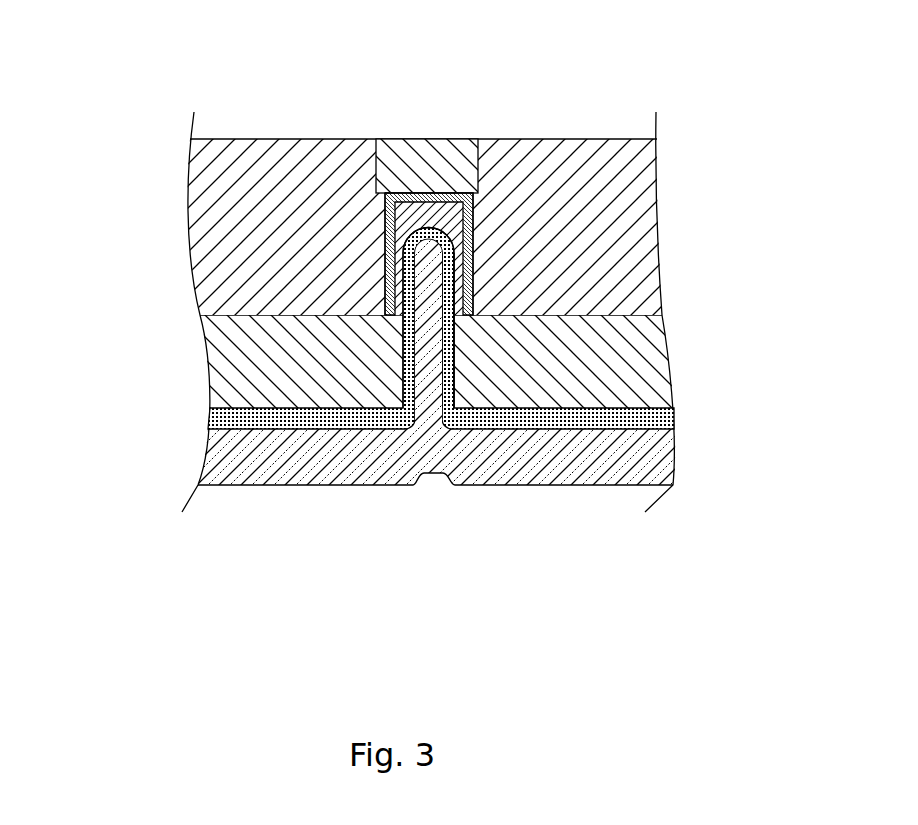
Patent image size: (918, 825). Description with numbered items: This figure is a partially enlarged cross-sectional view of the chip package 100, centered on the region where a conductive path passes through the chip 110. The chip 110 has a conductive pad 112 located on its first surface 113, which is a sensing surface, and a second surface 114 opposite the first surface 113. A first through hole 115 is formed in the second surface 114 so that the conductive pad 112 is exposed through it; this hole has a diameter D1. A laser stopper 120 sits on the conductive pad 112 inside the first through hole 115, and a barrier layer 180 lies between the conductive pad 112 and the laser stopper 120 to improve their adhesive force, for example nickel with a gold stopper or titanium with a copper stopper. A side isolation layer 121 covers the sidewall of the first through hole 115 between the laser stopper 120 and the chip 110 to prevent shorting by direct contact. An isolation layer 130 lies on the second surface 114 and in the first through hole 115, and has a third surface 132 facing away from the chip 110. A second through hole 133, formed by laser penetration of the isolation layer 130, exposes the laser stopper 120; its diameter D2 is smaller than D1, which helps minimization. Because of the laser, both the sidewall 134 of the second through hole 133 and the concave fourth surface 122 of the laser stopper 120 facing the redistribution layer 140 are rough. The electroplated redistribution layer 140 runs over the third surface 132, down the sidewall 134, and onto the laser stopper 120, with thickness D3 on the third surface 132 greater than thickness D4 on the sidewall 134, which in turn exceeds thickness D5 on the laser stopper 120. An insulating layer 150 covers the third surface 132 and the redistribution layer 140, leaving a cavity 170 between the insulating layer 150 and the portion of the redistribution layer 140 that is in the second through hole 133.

The chip package 100 is at (104, 30).
The chip 110 is at (632, 198).
The conductive pad 112 is at (471, 150).
The first surface 113 is at (257, 137).
The second surface 114 is at (243, 312).
The first through hole 115 is at (515, 313).
The laser stopper 120 is at (473, 225).
The side isolation layer 121 is at (383, 255).
The fourth surface 122 is at (393, 195).
The isolation layer 130 is at (605, 395).
The third surface 132 is at (242, 457).
The second through hole 133 is at (460, 370).
The sidewall 134 is at (457, 331).
The redistribution layer 140 is at (518, 422).
The insulating layer 150 is at (358, 468).
The cavity 170 is at (338, 315).
The barrier layer 180 is at (443, 226).
The diameter of the first through hole D1 is at (384, 274).
The diameter of the second through hole D2 is at (402, 349).
The thickness of the redistribution layer on the third surface D3 is at (303, 444).
The thickness of the redistribution layer on the sidewall D4 is at (476, 258).
The thickness of the redistribution layer on the laser stopper D5 is at (384, 219).